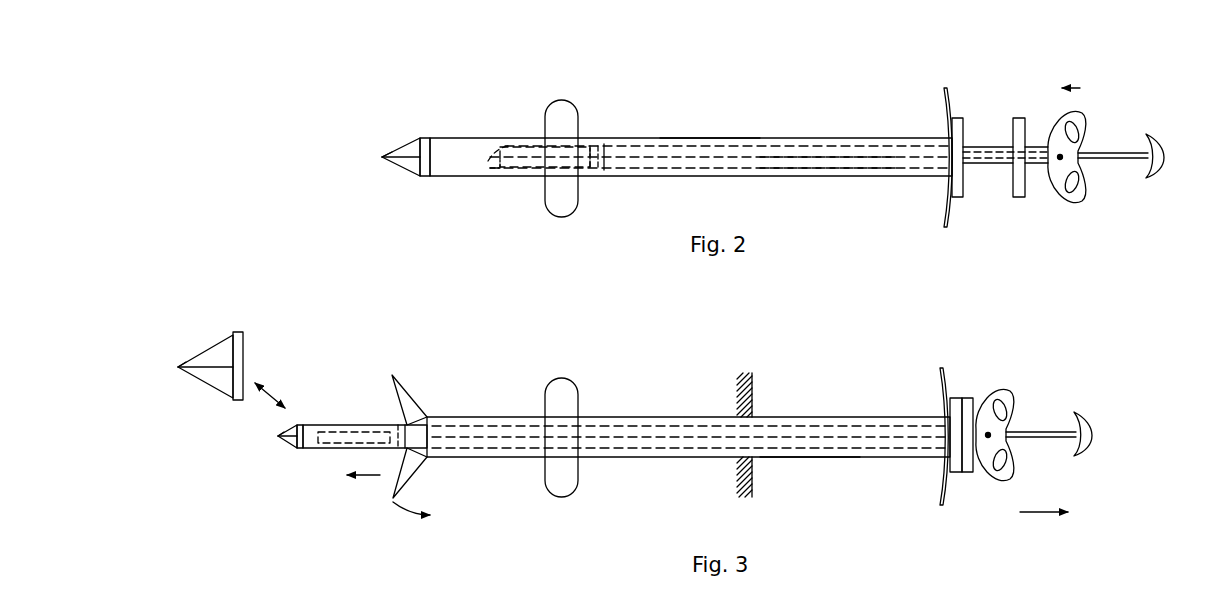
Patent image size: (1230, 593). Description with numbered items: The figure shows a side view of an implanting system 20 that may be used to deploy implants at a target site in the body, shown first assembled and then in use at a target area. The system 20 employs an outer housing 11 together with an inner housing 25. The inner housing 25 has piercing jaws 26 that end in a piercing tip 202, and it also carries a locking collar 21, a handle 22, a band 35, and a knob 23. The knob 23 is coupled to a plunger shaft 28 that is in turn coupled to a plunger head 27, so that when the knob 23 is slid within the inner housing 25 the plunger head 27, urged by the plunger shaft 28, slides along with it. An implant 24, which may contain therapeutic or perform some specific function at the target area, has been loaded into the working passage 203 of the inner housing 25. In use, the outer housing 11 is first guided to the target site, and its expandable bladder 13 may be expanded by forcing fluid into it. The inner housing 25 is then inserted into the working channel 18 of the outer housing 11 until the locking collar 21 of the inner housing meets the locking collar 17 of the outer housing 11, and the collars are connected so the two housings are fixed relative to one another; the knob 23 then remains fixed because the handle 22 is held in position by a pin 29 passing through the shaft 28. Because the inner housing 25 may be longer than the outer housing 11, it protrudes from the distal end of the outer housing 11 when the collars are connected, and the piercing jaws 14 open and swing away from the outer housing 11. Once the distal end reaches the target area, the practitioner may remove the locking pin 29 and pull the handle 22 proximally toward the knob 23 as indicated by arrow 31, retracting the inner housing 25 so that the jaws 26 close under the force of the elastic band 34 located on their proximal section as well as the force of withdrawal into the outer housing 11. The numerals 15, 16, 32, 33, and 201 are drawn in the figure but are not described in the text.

In FIG. 2, the outer housing 11 is at (452, 138).
In FIG. 3, the outer housing 11 is at (807, 417).
In FIG. 3, the expandable bladder 13 is at (558, 380).
In FIG. 2, the piercing jaws 14 is at (412, 166).
In FIG. 3, the piercing jaws 14 is at (407, 393).
In FIG. 2, the tip point 15 is at (382, 157).
In FIG. 2, the flange 16 is at (946, 88).
In FIG. 3, the flange 16 is at (944, 436).
In FIG. 2, the locking collar 17 is at (958, 118).
In FIG. 3, the locking collar 17 is at (958, 472).
In FIG. 2, the working channel 18 is at (833, 174).
In FIG. 2, the implanting system 20 is at (714, 118).
In FIG. 2, the locking collar 21 is at (1020, 198).
In FIG. 3, the locking collar 21 is at (967, 398).
In FIG. 2, the handle 22 is at (1085, 112).
In FIG. 3, the handle 22 is at (995, 434).
In FIG. 2, the knob 23 is at (1158, 168).
In FIG. 3, the knob 23 is at (1087, 443).
In FIG. 2, the implant 24 is at (522, 156).
In FIG. 3, the implant 24 is at (370, 437).
In FIG. 2, the inner housing 25 is at (660, 139).
In FIG. 3, the inner housing 25 is at (785, 450).
In FIG. 2, the piercing jaws 26 is at (493, 166).
In FIG. 3, the piercing jaws 26 is at (222, 352).
In FIG. 2, the plunger head 27 is at (605, 168).
In FIG. 2, the plunger shaft 28 is at (803, 159).
In FIG. 2, the pin 29 is at (1062, 156).
In FIG. 3, the pin 29 is at (990, 434).
In FIG. 3, the arrow 31 is at (1044, 529).
In FIG. 3, the rotation arrow 32 is at (411, 524).
In FIG. 3, the direction arrow 33 is at (363, 491).
In FIG. 3, the band 34 is at (237, 398).
In FIG. 2, the band 35 is at (428, 140).
In FIG. 2, the direction arrow 201 is at (1080, 88).
In FIG. 2, the piercing tip 202 is at (484, 157).
In FIG. 3, the piercing tip 202 is at (180, 368).
In FIG. 2, the working passage 203 is at (860, 166).